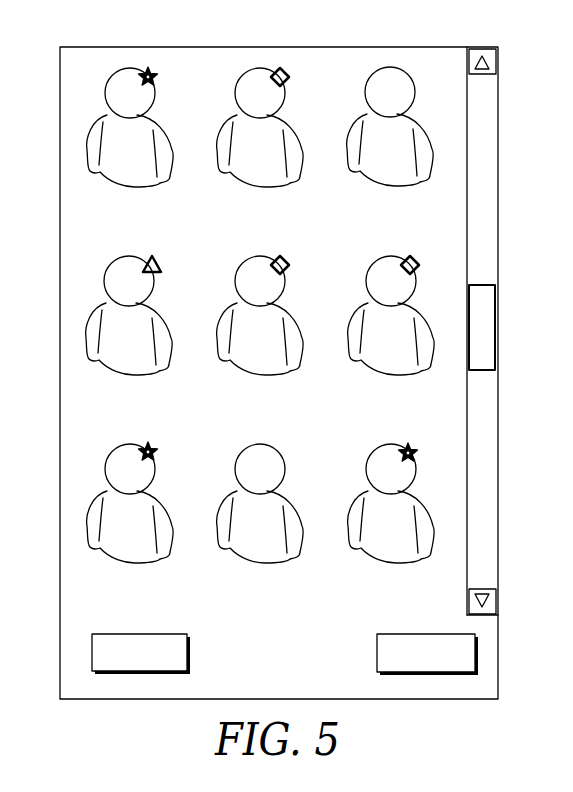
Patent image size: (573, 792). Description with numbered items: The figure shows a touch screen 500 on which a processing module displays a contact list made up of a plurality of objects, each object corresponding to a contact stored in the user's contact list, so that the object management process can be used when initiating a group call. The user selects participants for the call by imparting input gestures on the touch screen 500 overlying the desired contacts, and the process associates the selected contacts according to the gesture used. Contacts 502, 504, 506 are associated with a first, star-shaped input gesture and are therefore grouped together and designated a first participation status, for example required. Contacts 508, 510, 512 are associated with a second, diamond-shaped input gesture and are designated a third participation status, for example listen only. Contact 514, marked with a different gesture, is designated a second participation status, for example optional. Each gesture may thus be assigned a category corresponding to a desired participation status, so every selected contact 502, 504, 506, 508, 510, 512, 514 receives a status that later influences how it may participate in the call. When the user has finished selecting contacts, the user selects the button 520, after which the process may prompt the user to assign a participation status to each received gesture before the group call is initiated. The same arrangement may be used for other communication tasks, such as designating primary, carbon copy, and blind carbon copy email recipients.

The touch screen 500 is at (92, 47).
The contact 502 is at (76, 101).
The contact 504 is at (76, 478).
The contact 506 is at (348, 568).
The contact 508 is at (238, 61).
The contact 510 is at (300, 289).
The contact 512 is at (350, 380).
The contact 514 is at (75, 289).
The button 520 is at (190, 650).